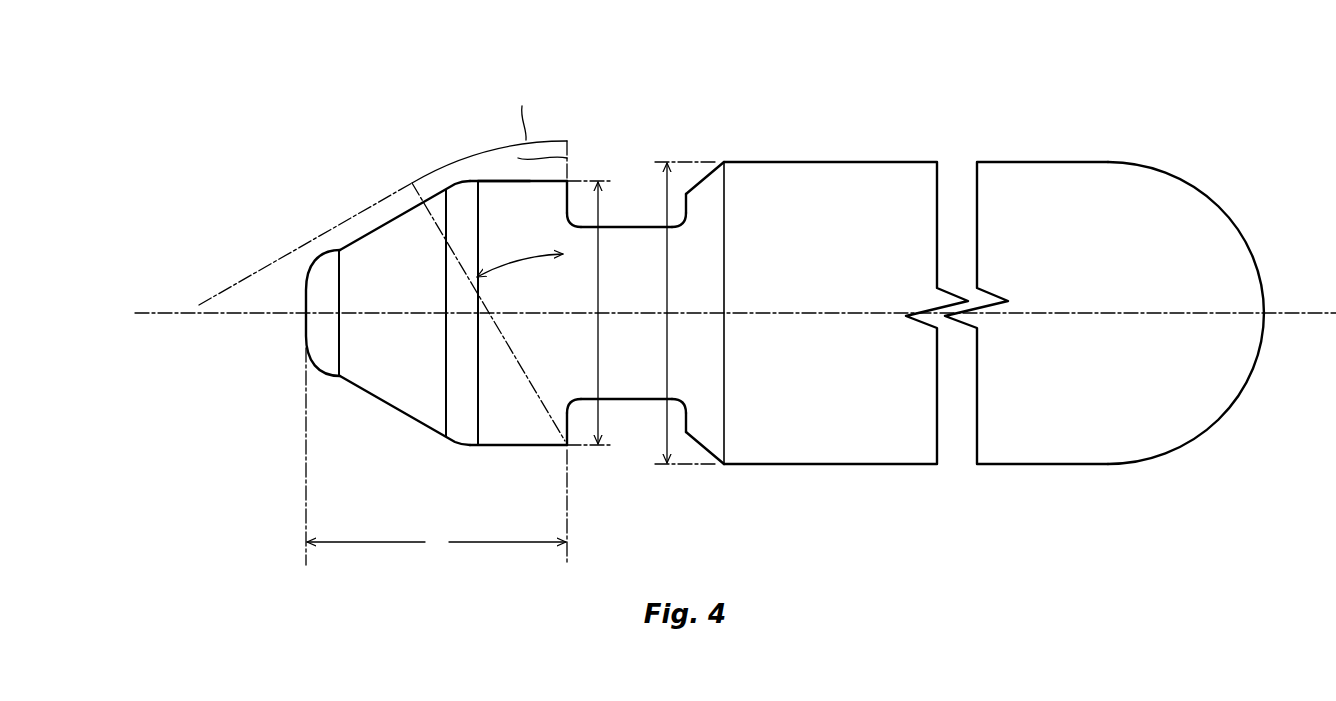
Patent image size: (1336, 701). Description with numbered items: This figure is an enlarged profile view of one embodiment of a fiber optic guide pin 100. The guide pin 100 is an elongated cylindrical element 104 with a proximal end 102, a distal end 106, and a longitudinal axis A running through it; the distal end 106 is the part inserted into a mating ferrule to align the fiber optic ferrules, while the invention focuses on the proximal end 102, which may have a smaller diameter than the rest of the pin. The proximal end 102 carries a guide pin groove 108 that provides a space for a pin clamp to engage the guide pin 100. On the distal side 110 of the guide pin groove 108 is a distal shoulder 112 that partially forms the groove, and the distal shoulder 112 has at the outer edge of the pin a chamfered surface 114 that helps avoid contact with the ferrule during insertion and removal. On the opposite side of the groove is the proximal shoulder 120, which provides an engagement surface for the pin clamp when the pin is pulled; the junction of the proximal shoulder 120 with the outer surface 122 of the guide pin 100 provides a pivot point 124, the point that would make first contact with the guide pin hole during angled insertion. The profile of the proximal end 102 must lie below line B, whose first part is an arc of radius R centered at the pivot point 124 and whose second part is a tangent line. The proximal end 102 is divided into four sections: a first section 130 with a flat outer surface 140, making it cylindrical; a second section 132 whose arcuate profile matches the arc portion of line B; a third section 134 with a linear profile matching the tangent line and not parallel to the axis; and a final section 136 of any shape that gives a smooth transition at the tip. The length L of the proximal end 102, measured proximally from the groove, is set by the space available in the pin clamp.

The guide pin 100 is at (950, 97).
The proximal end 102 is at (409, 436).
The elongated cylindrical element 104 is at (893, 466).
The distal end 106 is at (1165, 150).
The guide pin groove 108 is at (626, 418).
The distal side 110 is at (679, 435).
The distal shoulder 112 is at (680, 200).
The chamfered surface 114 is at (705, 452).
The proximal shoulder 120 is at (571, 190).
The outer surface 122 is at (513, 439).
The pivot point 124 is at (565, 452).
The first section 130 is at (490, 438).
The second section 132 is at (461, 440).
The third section 134 is at (392, 398).
The final section 136 is at (323, 344).
The flat outer surface 140 is at (492, 180).